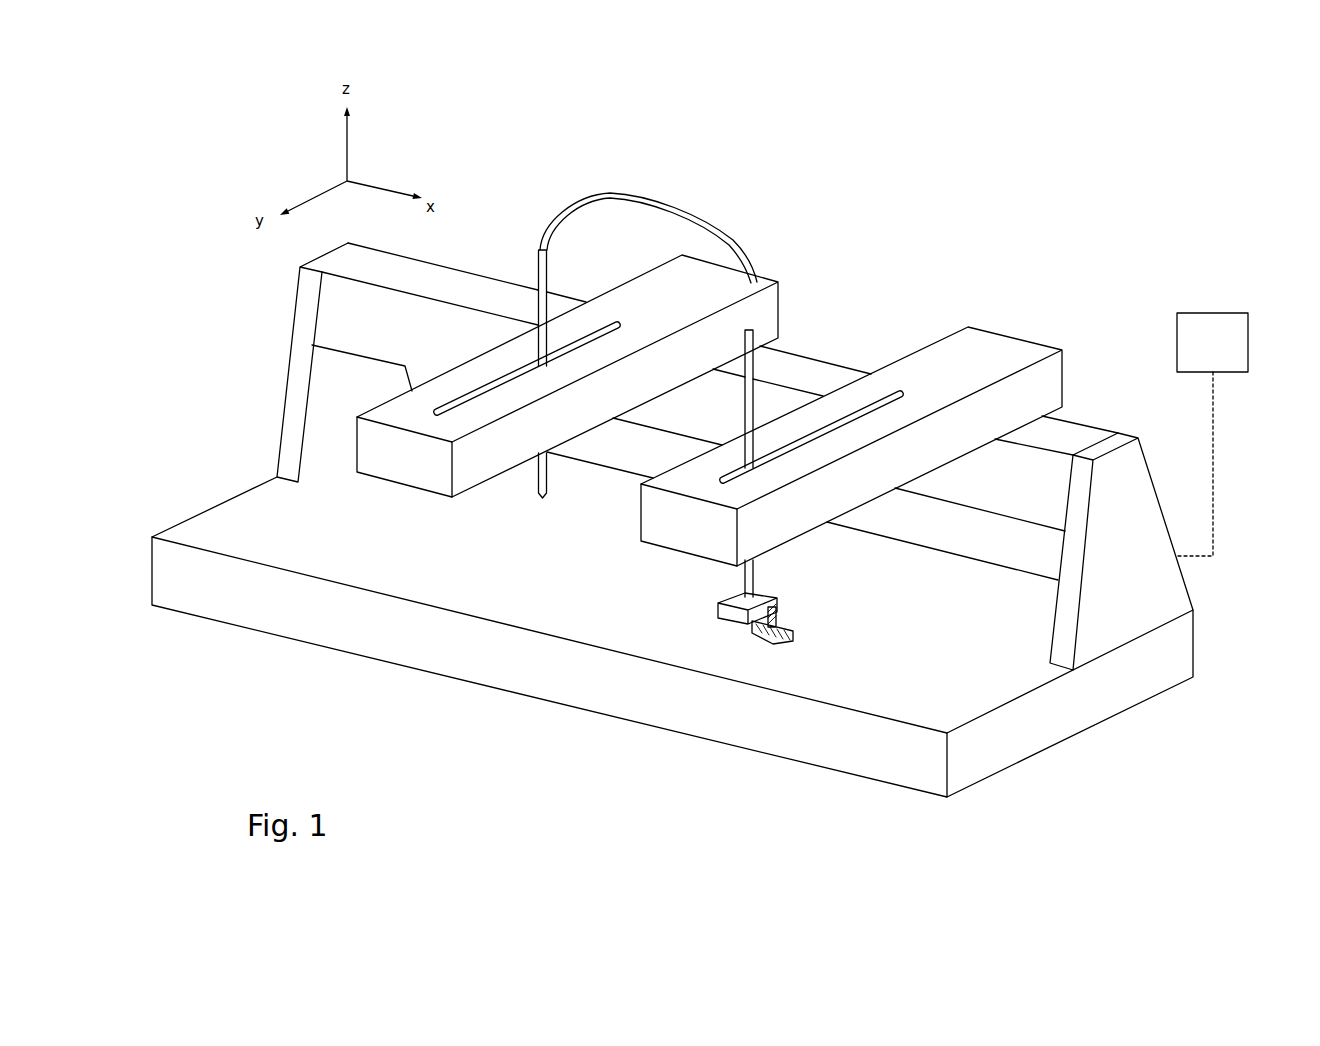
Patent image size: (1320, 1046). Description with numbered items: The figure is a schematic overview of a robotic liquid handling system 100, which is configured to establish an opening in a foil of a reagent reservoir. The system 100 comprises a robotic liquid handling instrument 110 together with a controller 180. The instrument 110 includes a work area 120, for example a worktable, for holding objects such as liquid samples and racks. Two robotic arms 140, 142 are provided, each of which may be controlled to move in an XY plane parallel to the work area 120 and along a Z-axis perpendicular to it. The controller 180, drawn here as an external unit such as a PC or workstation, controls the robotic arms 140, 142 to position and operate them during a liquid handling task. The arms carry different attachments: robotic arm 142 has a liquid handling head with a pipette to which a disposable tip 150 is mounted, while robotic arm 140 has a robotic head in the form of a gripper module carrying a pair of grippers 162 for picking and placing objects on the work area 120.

The robotic liquid handling system 100 is at (1183, 779).
The robotic liquid handling instrument 110 is at (1067, 304).
The work area 120 is at (212, 527).
The robotic arm 140 is at (940, 355).
The robotic arm 142 is at (757, 287).
The disposable tip 150 is at (545, 499).
The pair of grippers 162 is at (793, 633).
The controller 180 is at (1213, 312).